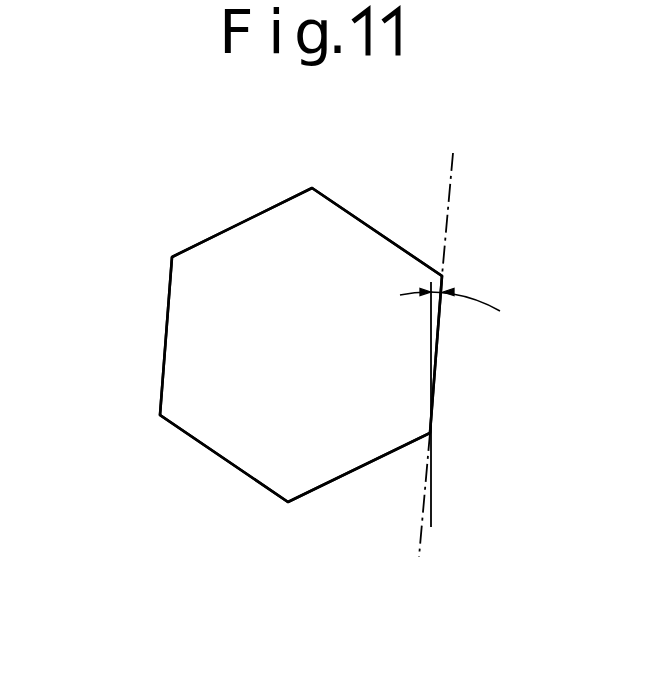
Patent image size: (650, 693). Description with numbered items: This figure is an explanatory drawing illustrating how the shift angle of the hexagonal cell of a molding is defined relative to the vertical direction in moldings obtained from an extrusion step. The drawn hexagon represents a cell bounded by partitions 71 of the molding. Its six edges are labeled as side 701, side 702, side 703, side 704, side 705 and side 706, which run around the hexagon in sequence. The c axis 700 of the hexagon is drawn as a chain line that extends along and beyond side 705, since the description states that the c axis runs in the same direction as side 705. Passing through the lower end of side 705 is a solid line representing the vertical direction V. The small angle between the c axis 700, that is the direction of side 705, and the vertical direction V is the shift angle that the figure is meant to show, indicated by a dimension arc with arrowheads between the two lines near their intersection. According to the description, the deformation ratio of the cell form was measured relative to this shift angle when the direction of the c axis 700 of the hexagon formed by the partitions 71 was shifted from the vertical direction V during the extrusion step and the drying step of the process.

The partitions 71 is at (180, 243).
The c axis 700 is at (447, 238).
The side 701 is at (237, 223).
The side 702 is at (163, 372).
The side 703 is at (201, 444).
The side 704 is at (358, 469).
The side 705 is at (438, 338).
The side 706 is at (381, 236).
The vertical direction V is at (432, 500).